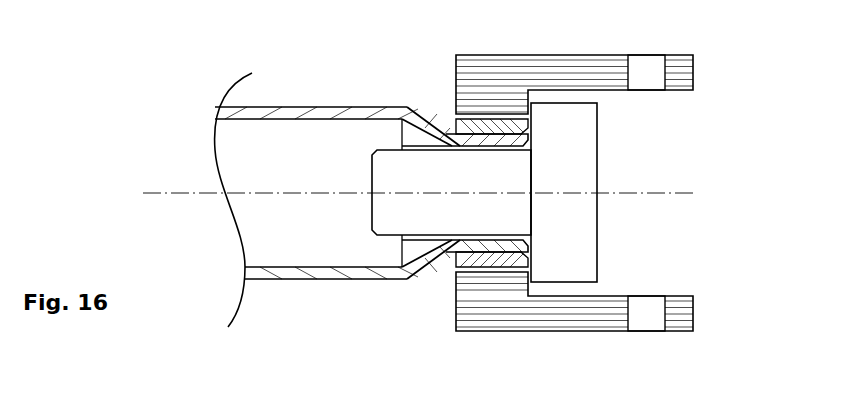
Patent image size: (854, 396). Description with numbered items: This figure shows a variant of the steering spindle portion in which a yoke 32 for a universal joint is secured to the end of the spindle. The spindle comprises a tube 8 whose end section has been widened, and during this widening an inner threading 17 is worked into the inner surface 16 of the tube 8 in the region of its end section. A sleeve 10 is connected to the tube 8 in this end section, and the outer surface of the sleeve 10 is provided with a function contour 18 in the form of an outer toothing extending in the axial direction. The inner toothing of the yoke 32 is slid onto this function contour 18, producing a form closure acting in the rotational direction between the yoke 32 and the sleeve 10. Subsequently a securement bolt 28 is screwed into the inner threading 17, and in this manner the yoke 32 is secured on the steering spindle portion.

The tube 8 is at (283, 108).
The sleeve 10 is at (482, 258).
The inner surface 16 is at (510, 150).
The inner threading 17 is at (478, 242).
The function contour 18 is at (508, 263).
The securement bolt 28 is at (582, 183).
The yoke 32 is at (572, 72).